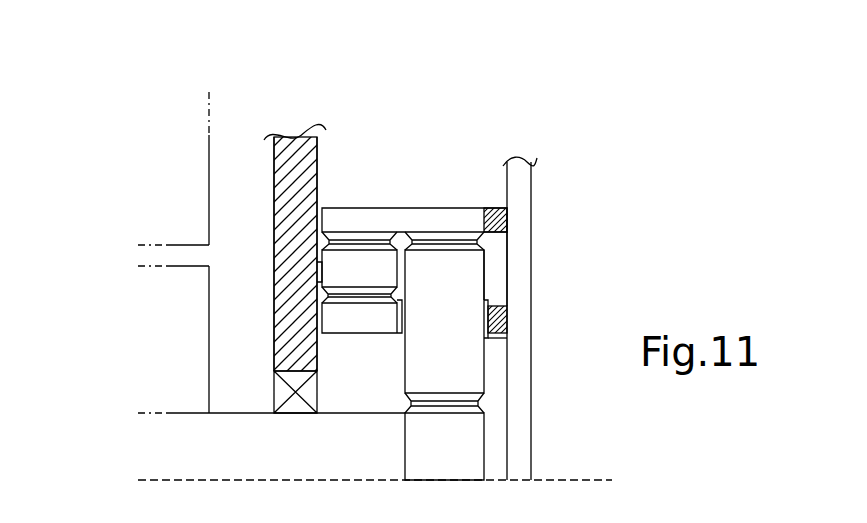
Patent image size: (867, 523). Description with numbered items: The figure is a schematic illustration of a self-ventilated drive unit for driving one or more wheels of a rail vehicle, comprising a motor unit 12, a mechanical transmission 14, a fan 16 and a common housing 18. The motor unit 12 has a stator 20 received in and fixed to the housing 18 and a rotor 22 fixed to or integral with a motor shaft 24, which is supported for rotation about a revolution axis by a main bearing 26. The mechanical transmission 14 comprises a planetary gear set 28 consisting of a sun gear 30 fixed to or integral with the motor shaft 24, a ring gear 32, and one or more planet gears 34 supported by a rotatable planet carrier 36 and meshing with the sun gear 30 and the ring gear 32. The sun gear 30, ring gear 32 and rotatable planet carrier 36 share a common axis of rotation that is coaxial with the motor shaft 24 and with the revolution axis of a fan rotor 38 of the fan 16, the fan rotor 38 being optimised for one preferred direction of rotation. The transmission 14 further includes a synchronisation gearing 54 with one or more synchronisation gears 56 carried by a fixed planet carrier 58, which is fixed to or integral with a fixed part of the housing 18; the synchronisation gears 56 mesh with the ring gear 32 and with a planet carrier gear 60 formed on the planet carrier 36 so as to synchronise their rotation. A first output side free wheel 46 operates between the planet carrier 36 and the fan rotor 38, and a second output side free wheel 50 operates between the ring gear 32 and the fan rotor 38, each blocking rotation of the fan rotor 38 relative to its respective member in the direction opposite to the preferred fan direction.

The motor unit 12 is at (249, 90).
The mechanical transmission 14 is at (410, 140).
The fan 16 is at (574, 152).
The common housing 18 is at (293, 182).
The stator 20 is at (153, 177).
The rotor 22 is at (148, 318).
The motor shaft 24 is at (246, 462).
The main bearing 26 is at (278, 385).
The planetary gear set 28 is at (500, 252).
The sun gear 30 is at (445, 463).
The ring gear 32 is at (417, 212).
The planet gears 34 is at (473, 383).
The rotatable planet carrier 36 is at (490, 338).
The fan rotor 38 is at (519, 264).
The first output side free wheel 46 is at (503, 312).
The second output side free wheel 50 is at (494, 215).
The synchronisation gearing 54 is at (319, 175).
The synchronisation gears 56 is at (362, 265).
The fixed planet carrier 58 is at (318, 268).
The planet carrier gear 60 is at (357, 318).